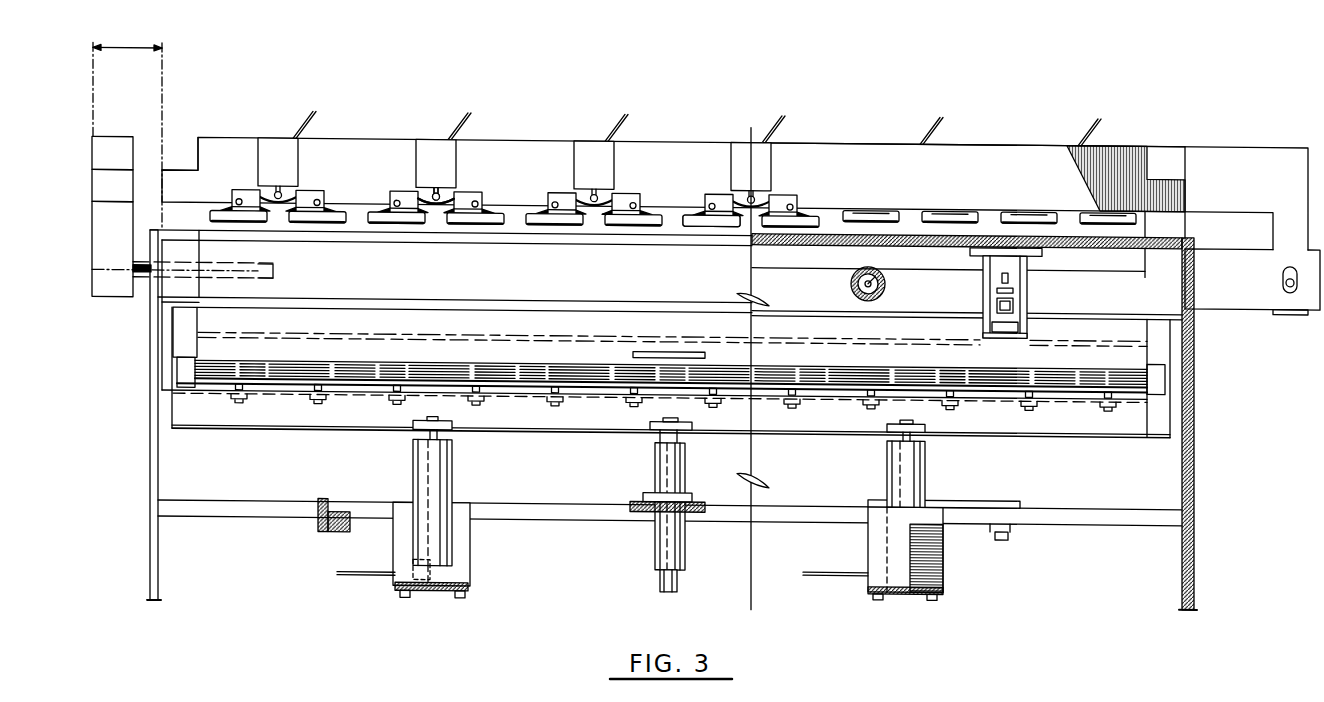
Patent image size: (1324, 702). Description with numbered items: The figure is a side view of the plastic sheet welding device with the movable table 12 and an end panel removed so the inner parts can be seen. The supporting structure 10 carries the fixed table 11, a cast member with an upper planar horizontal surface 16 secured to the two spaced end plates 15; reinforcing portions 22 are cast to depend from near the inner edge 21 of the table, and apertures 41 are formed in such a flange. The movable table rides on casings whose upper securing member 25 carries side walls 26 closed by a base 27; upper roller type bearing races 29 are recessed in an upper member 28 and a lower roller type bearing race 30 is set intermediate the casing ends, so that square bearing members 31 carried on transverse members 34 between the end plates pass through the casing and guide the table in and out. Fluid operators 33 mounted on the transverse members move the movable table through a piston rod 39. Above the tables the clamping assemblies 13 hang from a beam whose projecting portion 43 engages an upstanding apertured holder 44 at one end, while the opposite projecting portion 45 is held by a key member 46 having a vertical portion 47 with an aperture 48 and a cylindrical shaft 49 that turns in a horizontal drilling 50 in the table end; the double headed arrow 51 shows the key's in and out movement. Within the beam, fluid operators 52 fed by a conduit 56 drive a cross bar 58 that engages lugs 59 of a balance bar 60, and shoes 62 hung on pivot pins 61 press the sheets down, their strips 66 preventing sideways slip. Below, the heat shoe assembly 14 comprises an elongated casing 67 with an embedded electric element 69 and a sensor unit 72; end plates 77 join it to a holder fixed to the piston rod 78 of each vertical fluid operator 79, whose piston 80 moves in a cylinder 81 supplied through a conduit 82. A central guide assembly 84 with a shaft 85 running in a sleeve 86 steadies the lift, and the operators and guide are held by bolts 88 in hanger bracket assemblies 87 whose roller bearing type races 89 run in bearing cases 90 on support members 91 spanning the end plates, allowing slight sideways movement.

The supporting structure 10 is at (1122, 562).
The fixed table 11 is at (346, 229).
The movable table 12 is at (832, 226).
The clamping assemblies 13 is at (938, 173).
The heat shoe assembly 14 is at (272, 440).
The end plates 15 is at (152, 560).
The upper planar horizontal surface 16 is at (794, 228).
The inner edge 21 is at (546, 238).
The reinforcing portions 22 is at (398, 283).
The upper securing member 25 is at (1040, 248).
The side walls 26 is at (990, 296).
The base 27 is at (1012, 335).
The upper member 28 is at (1012, 278).
The upper roller type bearing races 29 is at (1003, 277).
The lower roller type bearing race 30 is at (995, 333).
The bearing members 31 is at (1012, 296).
The fluid operators 33 is at (880, 290).
The transverse members 34 is at (838, 292).
The piston rod 39 is at (870, 276).
The apertures 41 is at (470, 280).
The projecting portion 43 is at (1168, 195).
The upstanding apertured holder 44 is at (1172, 153).
The projecting portion 45 is at (178, 130).
The key member 46 is at (135, 105).
The vertical portion 47 is at (117, 148).
The aperture 48 is at (120, 187).
The cylindrical shaft 49 is at (135, 262).
The horizontal drilling 50 is at (260, 268).
The double headed arrow 51 is at (127, 81).
The fluid operators 52 is at (433, 150).
The conduit 56 is at (468, 112).
The cross bar 58 is at (605, 195).
The lugs 59 is at (434, 188).
The balance bar 60 is at (458, 195).
The pivot pins 61 is at (563, 190).
The shoes 62 is at (714, 198).
The strips 66 is at (718, 222).
The elongated casing 67 is at (184, 332).
The electric element 69 is at (320, 333).
The sensor unit 72 is at (633, 351).
The end plates 77 is at (176, 376).
The piston rod 78 is at (450, 426).
The fluid operator 79 is at (454, 471).
The piston 80 is at (410, 558).
The cylinder 81 is at (420, 470).
The conduit 82 is at (370, 575).
The central guide assembly 84 is at (450, 580).
The shaft 85 is at (680, 583).
The sleeve 86 is at (675, 550).
The hanger bracket assemblies 87 is at (462, 542).
The bolts 88 is at (462, 594).
The roller bearing type races 89 is at (333, 532).
The bearing cases 90 is at (325, 530).
The support members 91 is at (212, 516).